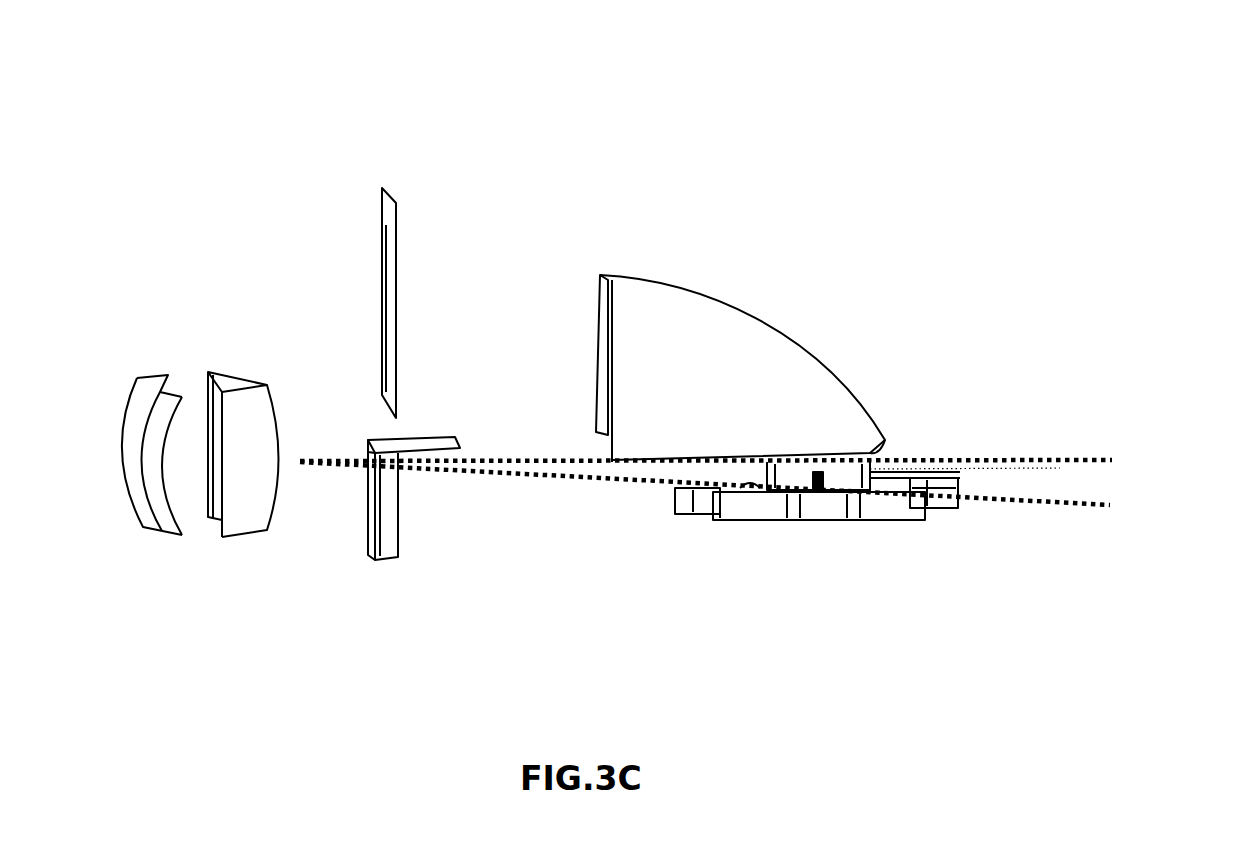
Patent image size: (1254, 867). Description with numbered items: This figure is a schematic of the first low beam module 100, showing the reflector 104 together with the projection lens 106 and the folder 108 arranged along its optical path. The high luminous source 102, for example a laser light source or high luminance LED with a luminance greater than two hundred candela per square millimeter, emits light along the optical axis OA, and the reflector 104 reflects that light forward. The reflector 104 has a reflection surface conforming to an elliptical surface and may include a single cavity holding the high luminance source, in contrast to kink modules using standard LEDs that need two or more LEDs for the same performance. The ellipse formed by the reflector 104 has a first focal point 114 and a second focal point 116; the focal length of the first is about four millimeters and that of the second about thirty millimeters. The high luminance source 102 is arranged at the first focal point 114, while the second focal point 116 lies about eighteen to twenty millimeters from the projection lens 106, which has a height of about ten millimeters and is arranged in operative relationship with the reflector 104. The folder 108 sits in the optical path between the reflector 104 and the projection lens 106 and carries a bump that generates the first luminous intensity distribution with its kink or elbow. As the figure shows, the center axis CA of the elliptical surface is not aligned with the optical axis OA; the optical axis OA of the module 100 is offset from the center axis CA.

The first low beam module 100 is at (744, 130).
The high luminous source 102 is at (832, 464).
The reflector 104 is at (833, 352).
The projection lens 106 is at (141, 533).
The folder 108 is at (404, 238).
The first focal point 114 is at (747, 464).
The second focal point 116 is at (479, 466).
The center axis CA is at (1074, 459).
The optical axis OA is at (1112, 498).